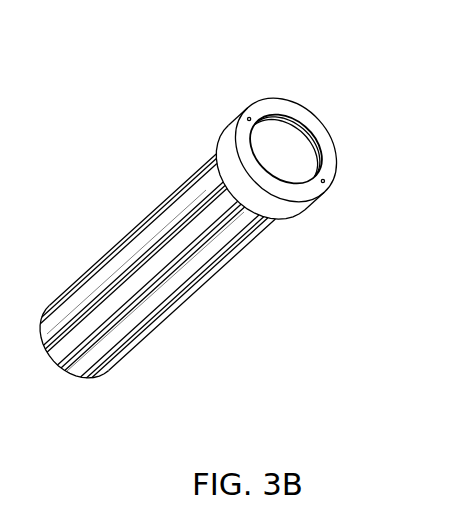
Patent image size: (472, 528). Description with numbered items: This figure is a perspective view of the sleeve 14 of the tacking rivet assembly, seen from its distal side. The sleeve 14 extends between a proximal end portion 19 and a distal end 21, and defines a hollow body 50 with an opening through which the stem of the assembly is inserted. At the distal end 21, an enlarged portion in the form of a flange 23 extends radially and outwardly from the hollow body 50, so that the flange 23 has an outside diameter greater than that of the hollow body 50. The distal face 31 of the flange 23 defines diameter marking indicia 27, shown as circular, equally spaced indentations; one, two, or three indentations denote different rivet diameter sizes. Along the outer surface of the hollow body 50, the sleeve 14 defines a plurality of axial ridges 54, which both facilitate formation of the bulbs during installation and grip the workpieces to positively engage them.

The sleeve 14 is at (113, 68).
The proximal end portion 19 is at (139, 309).
The distal end 21 is at (265, 185).
The flange 23 is at (222, 147).
The diameter marking indicia 27 is at (247, 118).
The distal face 31 is at (298, 117).
The hollow body 50 is at (163, 233).
The axial ridges 54 is at (112, 284).